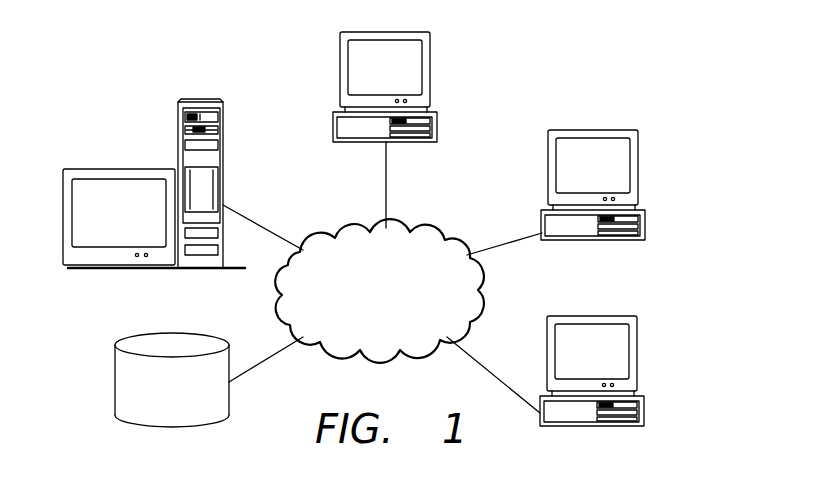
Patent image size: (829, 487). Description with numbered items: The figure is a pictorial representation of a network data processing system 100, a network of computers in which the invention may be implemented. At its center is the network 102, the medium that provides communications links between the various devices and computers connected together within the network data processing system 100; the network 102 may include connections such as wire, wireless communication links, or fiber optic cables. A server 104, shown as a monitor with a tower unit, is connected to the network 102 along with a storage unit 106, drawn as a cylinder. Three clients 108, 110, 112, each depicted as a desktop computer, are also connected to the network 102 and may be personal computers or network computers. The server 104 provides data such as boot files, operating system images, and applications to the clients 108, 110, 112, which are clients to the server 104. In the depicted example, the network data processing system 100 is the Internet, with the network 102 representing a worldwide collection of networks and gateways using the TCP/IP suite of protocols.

The network data processing system 100 is at (272, 76).
The network 102 is at (400, 318).
The server 104 is at (180, 126).
The storage unit 106 is at (115, 381).
The client 108 is at (430, 79).
The client 110 is at (639, 173).
The client 112 is at (639, 359).